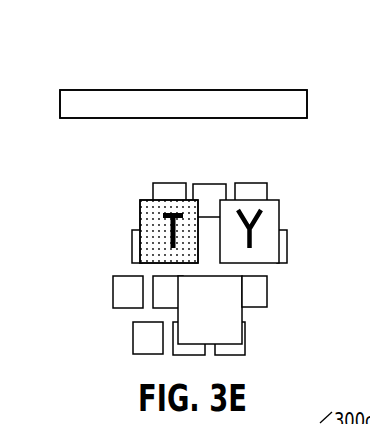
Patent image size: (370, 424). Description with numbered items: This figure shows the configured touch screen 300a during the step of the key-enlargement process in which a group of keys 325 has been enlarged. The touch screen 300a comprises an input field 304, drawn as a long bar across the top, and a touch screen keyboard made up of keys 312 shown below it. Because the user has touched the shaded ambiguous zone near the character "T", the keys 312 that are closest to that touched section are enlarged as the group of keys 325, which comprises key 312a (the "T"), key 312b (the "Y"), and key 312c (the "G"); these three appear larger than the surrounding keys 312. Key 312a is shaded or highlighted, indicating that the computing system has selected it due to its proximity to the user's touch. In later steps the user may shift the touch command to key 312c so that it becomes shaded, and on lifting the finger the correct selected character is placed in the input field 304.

The touch screen 300a is at (250, 81).
The input field 304 is at (60, 100).
The keys 312 is at (198, 248).
The key 312a is at (132, 220).
The key 312b is at (268, 222).
The key 312c is at (236, 316).
The group of keys 325 is at (138, 209).